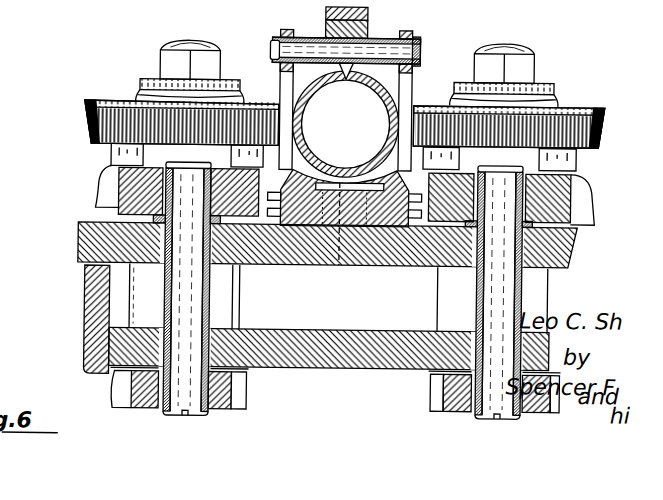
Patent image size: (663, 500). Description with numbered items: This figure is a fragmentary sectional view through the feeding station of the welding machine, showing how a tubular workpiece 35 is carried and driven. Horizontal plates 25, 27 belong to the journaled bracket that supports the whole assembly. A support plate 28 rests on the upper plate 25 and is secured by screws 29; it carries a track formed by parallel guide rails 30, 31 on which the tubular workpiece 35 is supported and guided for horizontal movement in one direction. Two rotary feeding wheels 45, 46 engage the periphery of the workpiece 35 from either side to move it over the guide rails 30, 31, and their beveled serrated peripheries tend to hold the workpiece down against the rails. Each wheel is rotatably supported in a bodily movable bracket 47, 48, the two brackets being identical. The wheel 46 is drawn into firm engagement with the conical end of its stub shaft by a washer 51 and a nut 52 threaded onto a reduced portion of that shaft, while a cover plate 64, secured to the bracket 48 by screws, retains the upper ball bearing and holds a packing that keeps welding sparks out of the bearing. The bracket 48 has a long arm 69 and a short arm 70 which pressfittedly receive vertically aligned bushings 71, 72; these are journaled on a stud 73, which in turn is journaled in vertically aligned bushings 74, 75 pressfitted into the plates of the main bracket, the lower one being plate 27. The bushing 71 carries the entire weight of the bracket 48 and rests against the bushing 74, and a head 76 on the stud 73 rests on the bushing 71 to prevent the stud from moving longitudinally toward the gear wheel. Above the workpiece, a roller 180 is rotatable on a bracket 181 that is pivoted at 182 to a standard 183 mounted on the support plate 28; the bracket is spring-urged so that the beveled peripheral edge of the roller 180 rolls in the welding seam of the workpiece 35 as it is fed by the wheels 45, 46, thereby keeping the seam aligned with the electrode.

The horizontal plate 25 is at (90, 246).
The horizontal plate 27 is at (307, 368).
The support plate 28 is at (322, 214).
The screws 29 is at (341, 266).
The guide rail 30 is at (380, 175).
The guide rail 31 is at (303, 163).
The tubular workpiece 35 is at (302, 148).
The rotary wheel 45 is at (595, 105).
The rotary wheel 46 is at (89, 103).
The bodily movable bracket 47 is at (548, 283).
The bodily movable bracket 48 is at (132, 300).
The washer 51 is at (143, 81).
The nut 52 is at (213, 59).
The cover plate 64 is at (108, 155).
The long arm 69 is at (118, 188).
The short arm 70 is at (243, 402).
The bushing 71 is at (165, 202).
The bushing 72 is at (205, 415).
The stud 73 is at (235, 290).
The bushing 74 is at (163, 247).
The bushing 75 is at (85, 353).
The head 76 is at (180, 167).
The roller 180 is at (333, 47).
The bracket 181 is at (366, 31).
The pivot 182 is at (270, 46).
The standard 183 is at (414, 41).